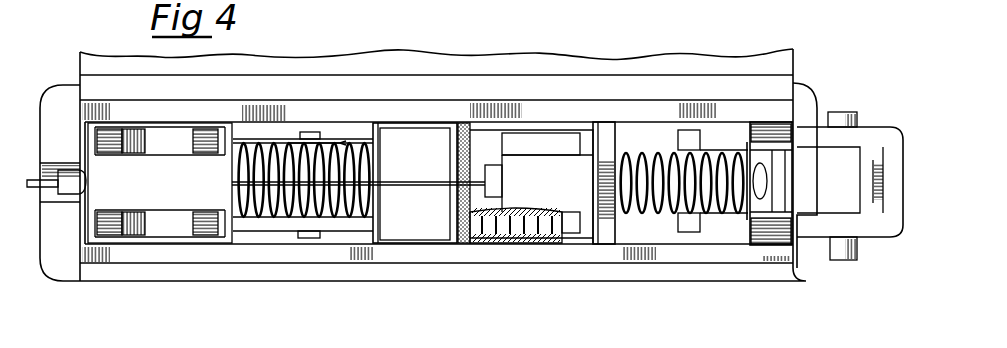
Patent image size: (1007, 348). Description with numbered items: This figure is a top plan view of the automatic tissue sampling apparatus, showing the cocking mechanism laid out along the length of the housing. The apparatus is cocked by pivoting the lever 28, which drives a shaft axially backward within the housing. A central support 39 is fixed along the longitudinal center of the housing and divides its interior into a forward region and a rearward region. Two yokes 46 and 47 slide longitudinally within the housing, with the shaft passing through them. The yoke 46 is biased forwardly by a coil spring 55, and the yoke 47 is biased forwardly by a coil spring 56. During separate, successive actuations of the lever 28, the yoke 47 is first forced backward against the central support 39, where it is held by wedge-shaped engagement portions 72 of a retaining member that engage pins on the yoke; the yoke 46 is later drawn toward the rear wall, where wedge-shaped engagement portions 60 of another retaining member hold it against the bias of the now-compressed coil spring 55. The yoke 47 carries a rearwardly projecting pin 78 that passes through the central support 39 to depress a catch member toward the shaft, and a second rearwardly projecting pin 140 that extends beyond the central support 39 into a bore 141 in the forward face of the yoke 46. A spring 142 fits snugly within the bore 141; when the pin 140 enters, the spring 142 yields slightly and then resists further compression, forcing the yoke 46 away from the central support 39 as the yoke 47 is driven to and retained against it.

The lever 28 is at (875, 230).
The central support 39 is at (408, 230).
The yoke 46 is at (603, 230).
The yoke 47 is at (207, 234).
The coil spring 55 is at (718, 213).
The coil spring 56 is at (258, 213).
The engagement portions 60 is at (690, 230).
The engagement portions 72 is at (312, 236).
The rearwardly projecting pin 78 is at (289, 140).
The rearwardly projecting pin 140 is at (342, 227).
The bore 141 is at (528, 232).
The spring 142 is at (510, 235).